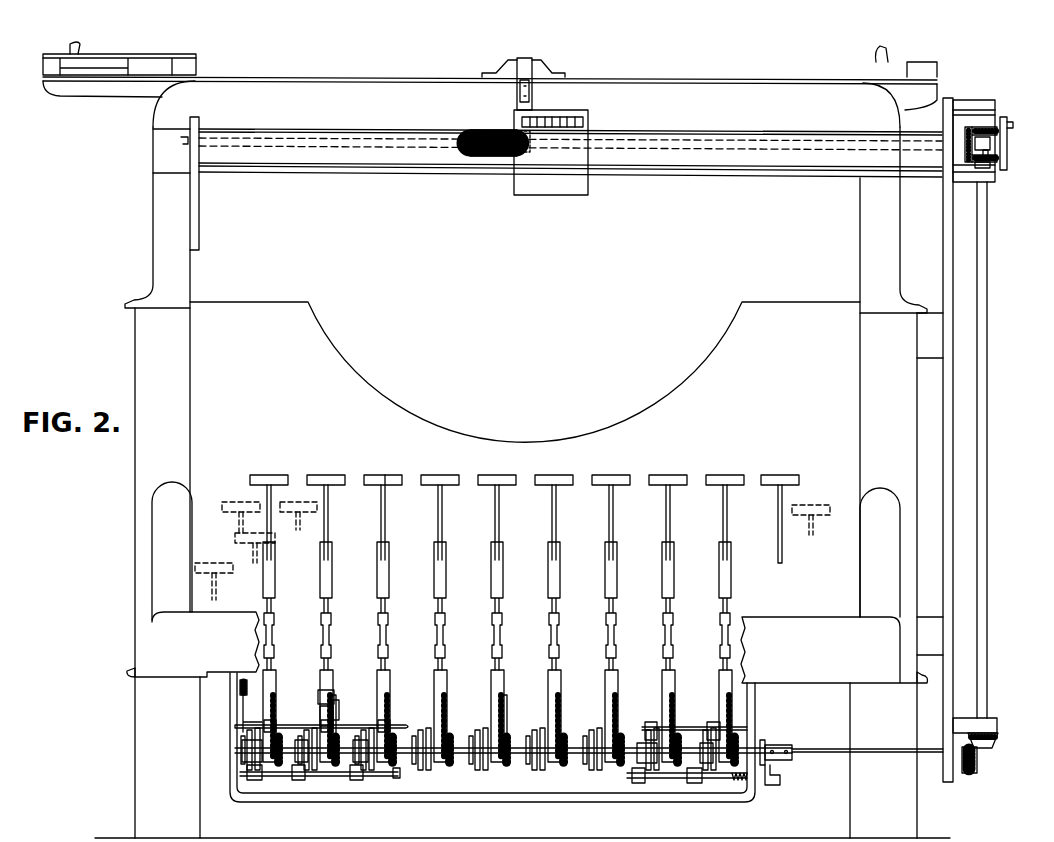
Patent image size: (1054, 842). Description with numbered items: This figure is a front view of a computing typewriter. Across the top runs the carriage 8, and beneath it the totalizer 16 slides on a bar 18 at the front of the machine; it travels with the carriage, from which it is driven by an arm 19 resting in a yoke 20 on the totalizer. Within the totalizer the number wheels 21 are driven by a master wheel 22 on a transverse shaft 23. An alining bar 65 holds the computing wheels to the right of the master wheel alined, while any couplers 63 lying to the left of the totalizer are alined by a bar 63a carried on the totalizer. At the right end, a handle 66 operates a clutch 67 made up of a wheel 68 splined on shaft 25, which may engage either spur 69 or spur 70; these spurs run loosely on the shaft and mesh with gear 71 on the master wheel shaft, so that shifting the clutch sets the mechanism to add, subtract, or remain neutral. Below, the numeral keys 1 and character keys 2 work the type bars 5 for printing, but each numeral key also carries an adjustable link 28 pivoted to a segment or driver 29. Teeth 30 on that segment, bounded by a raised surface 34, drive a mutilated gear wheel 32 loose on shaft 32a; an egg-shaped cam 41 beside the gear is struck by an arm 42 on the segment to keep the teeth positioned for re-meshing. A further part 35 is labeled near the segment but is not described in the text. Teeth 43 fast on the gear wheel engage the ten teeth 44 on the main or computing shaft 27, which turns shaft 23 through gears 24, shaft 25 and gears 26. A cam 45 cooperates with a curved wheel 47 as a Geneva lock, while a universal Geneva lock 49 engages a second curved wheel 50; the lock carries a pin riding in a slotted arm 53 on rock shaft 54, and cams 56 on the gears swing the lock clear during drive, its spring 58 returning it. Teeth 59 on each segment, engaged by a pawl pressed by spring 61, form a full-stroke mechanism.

The numeral keys 1 is at (447, 478).
The character keys 2 is at (238, 504).
The type bars 5 is at (298, 780).
The carriage 8 is at (196, 72).
The totalizer 16 is at (580, 194).
The bar 18 is at (380, 170).
The arm 19 is at (520, 90).
The yoke 20 is at (545, 112).
The number wheels 21 is at (583, 118).
The master wheel 22 is at (524, 153).
The shaft 23 is at (662, 151).
The gears 24 is at (975, 772).
The shaft 25 is at (984, 492).
The gears 26 is at (996, 746).
The main or computing shaft 27 is at (884, 755).
The adjustable link 28 is at (446, 592).
The segment or driver 29 is at (334, 720).
The teeth 30 is at (320, 696).
The mutilated gear wheel 32 is at (500, 802).
The shaft 32a is at (412, 762).
The raised surface 34 is at (331, 672).
The pawl 35 is at (336, 704).
The egg-shaped cam 41 is at (340, 740).
The arm 42 is at (337, 764).
The teeth 43 is at (314, 733).
The teeth 44 is at (316, 780).
The cam 45 is at (482, 768).
The wheel 47 is at (320, 782).
The universal Geneva lock 49 is at (778, 750).
The curved surfaced wheel 50 is at (763, 742).
The arm 53 is at (777, 777).
The rock shaft 54 is at (270, 776).
The cams 56 is at (306, 735).
The spring 58 is at (741, 784).
The teeth 59 is at (334, 690).
The spring 61 is at (240, 688).
The couplers 63 is at (490, 152).
The bar 63a is at (186, 140).
The alining bar 65 is at (634, 138).
The handle 66 is at (1013, 125).
The clutch 67 is at (1007, 146).
The wheel 68 is at (990, 152).
The spur 69 is at (982, 168).
The spur 70 is at (975, 126).
The gear 71 is at (965, 145).